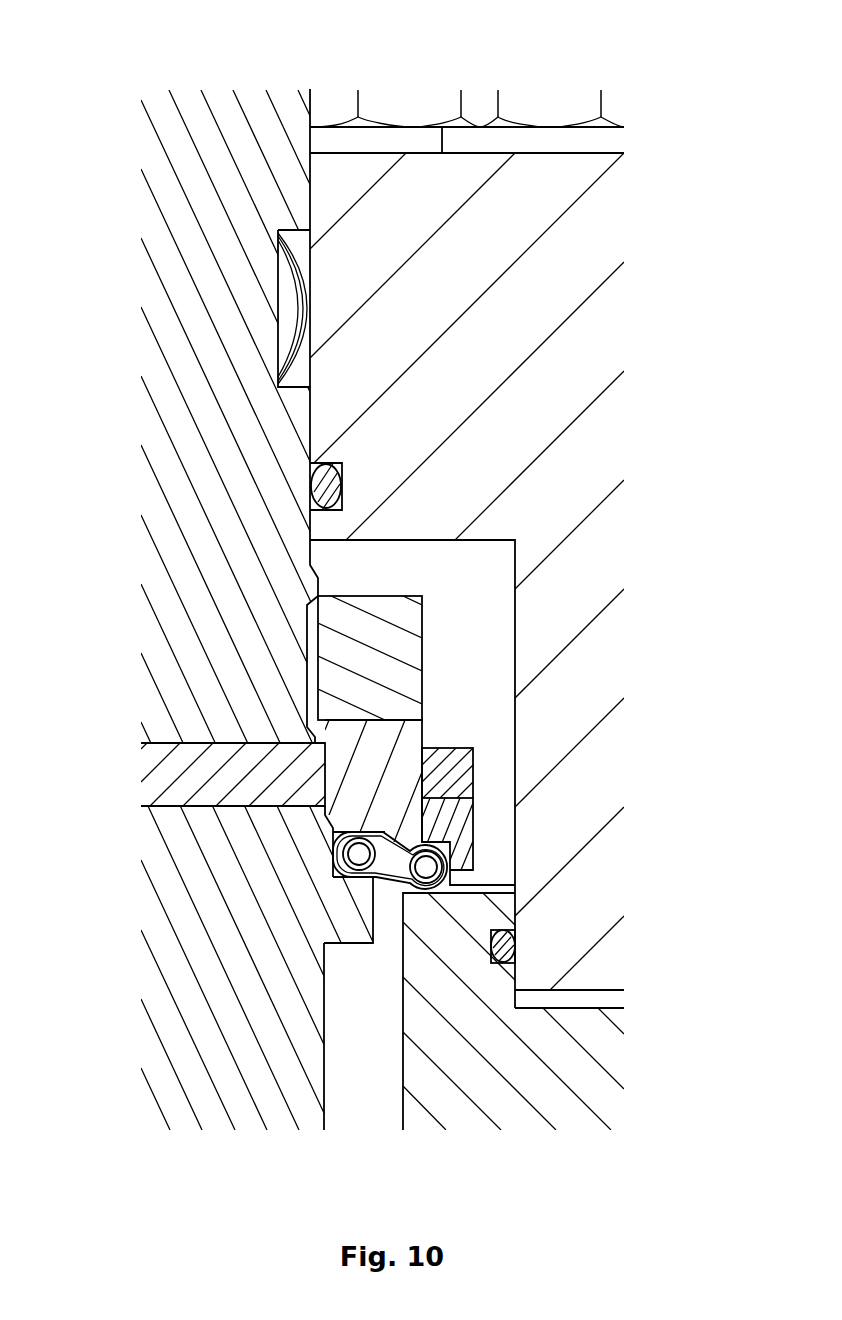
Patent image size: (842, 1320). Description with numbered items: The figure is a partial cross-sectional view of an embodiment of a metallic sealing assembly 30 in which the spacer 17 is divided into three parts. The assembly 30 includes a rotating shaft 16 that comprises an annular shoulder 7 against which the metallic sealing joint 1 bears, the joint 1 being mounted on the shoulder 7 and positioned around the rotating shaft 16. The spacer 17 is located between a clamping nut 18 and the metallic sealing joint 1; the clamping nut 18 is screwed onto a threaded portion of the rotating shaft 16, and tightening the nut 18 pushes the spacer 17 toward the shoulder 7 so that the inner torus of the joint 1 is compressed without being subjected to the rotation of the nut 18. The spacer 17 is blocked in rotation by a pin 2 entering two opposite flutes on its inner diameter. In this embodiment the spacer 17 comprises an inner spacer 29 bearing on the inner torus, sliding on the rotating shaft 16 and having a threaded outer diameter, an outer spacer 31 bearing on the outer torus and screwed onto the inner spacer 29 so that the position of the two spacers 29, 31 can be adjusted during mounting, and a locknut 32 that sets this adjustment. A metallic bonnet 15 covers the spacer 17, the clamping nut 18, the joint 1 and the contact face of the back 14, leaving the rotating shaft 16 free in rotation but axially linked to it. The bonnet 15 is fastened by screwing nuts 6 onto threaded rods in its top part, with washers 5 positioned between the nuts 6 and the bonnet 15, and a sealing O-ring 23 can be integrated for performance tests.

The metallic sealing joint 1 is at (390, 883).
The pin 2 is at (213, 768).
The washers 5 is at (403, 142).
The nuts 6 is at (435, 105).
The annular shoulder 7 is at (350, 925).
The back 14 is at (527, 1077).
The bonnet 15 is at (560, 255).
The rotating shaft 16 is at (180, 445).
The spacer 17 is at (543, 788).
The clamping nut 18 is at (338, 651).
The sealing O-ring 23 is at (517, 946).
The inner spacer 29 is at (397, 755).
The assembly 30 is at (107, 212).
The outer spacer 31 is at (457, 812).
The locknut 32 is at (467, 769).